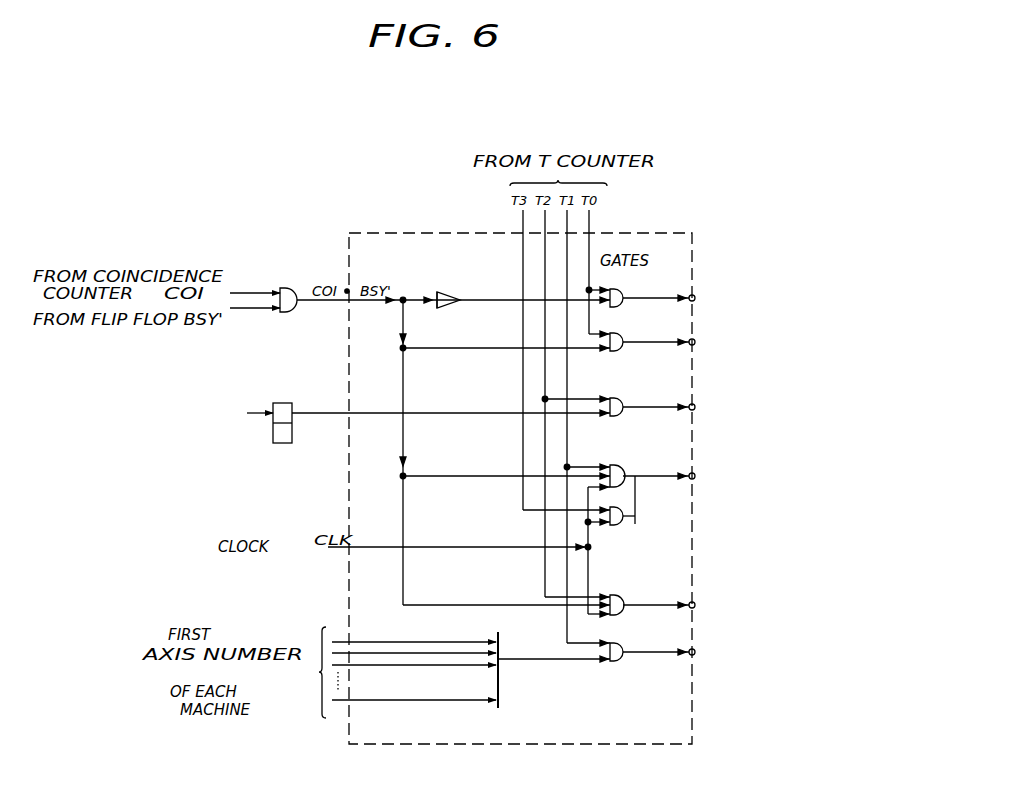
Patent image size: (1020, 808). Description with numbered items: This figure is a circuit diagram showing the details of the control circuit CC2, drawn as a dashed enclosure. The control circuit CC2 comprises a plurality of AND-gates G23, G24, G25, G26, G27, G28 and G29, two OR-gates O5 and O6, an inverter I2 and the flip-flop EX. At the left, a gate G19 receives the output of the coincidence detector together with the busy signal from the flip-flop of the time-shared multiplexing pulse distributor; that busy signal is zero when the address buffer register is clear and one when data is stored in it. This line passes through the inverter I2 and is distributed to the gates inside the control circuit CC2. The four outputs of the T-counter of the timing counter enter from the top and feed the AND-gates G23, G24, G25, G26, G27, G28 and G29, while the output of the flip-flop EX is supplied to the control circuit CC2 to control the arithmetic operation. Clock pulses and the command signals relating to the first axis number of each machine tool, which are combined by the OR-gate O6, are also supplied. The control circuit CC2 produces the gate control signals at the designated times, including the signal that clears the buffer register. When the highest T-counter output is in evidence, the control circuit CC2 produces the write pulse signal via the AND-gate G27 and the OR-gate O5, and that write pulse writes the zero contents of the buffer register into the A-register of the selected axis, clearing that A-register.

The AND gate G19 (coincidence counter / busy flip flop) G19 is at (265, 281).
The inverter I2 is at (508, 262).
The AND-gate G23 is at (617, 288).
The AND-gate G24 is at (617, 332).
The AND-gate G25 is at (617, 397).
The AND-gate G26 is at (618, 464).
The AND-gate G27 is at (618, 525).
The OR-gate O5 is at (635, 505).
The AND-gate G28 is at (618, 615).
The AND-gate G29 is at (618, 661).
The flip-flop EX is at (273, 435).
The OR-gate O6 is at (498, 694).
The control circuit CC2 is at (415, 745).